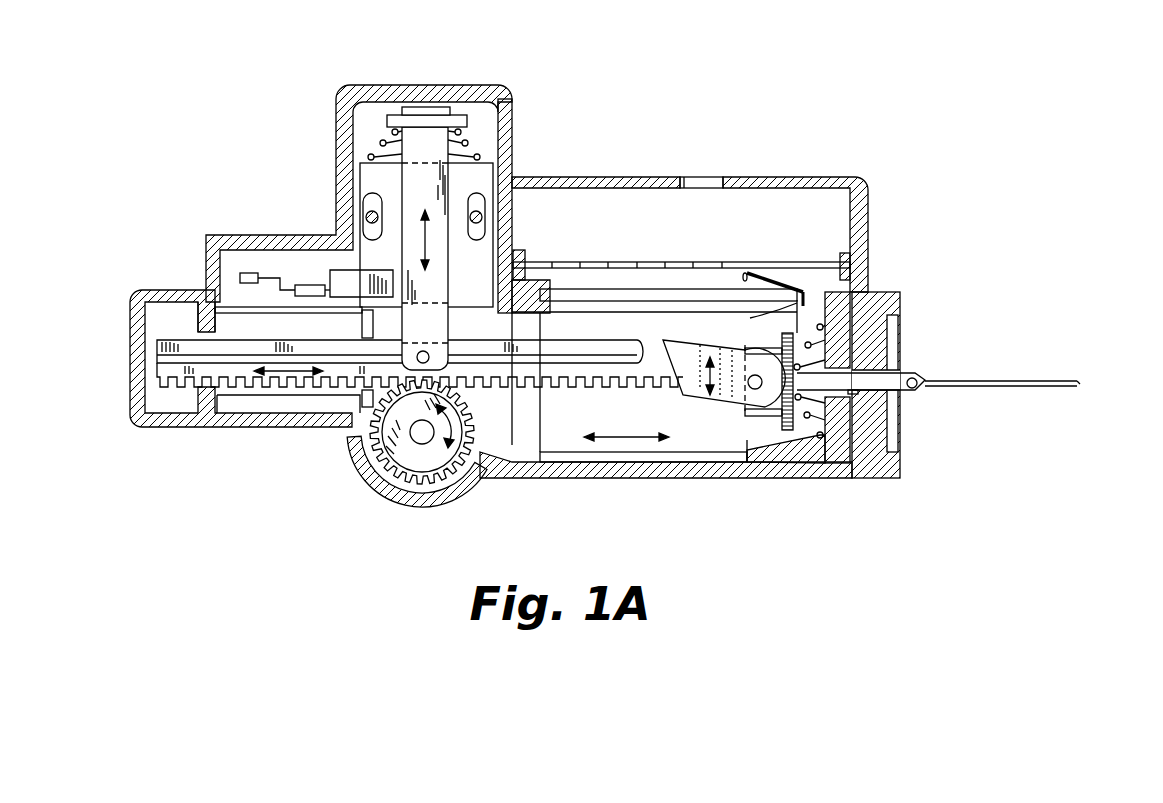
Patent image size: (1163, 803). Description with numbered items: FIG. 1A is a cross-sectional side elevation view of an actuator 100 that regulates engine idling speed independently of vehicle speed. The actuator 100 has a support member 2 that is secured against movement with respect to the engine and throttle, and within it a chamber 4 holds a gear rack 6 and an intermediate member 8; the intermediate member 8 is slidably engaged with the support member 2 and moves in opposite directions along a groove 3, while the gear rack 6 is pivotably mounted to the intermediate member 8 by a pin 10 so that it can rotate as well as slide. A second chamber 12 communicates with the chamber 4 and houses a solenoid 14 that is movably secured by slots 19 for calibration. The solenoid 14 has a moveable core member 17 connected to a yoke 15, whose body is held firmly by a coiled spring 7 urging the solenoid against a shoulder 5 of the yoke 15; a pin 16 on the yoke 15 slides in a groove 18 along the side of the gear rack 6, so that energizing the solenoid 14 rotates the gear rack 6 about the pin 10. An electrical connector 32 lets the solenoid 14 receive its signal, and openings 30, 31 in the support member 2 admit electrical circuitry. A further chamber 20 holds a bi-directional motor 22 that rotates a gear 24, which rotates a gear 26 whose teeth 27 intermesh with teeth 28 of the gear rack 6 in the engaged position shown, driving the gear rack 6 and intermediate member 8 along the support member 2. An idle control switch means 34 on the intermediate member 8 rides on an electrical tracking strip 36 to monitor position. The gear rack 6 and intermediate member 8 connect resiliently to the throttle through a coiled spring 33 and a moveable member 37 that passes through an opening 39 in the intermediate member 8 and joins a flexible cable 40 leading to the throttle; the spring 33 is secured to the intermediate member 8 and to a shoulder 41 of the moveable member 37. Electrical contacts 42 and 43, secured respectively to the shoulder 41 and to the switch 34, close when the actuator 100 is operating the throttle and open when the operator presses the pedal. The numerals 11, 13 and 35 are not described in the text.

The actuator 100 is at (582, 131).
The support member 2 is at (728, 475).
The groove 3 is at (604, 295).
The chamber 4 is at (712, 445).
The shoulder 5 is at (440, 305).
The gear rack 6 is at (725, 398).
The coiled spring 7 is at (383, 143).
The intermediate member 8 is at (813, 470).
The pin 10 is at (752, 390).
The end block 11 is at (878, 292).
The chamber 12 is at (483, 122).
The cap flange 13 is at (397, 113).
The solenoid 14 is at (516, 150).
The yoke 15 is at (413, 178).
The pin 16 is at (427, 352).
The moveable core member 17 is at (437, 107).
The groove 18 is at (166, 350).
The slots 19 is at (368, 210).
The chamber 20 is at (236, 400).
The bi-directional motor 22 is at (298, 398).
The gear 24 is at (395, 355).
The gear 26 is at (378, 476).
The teeth 27 is at (445, 480).
The teeth 28 is at (627, 387).
The opening 30 is at (703, 176).
The opening 31 is at (178, 290).
The electrical connector 32 is at (236, 272).
The coiled spring 33 is at (828, 340).
The idle control switch means 34 is at (748, 277).
The plate 35 is at (668, 300).
The electrical tracking strip 36 is at (545, 268).
The moveable member 37 is at (873, 373).
The opening 39 is at (855, 393).
The flexible cable 40 is at (960, 382).
The shoulder 41 is at (783, 425).
The electrical contact 42 is at (797, 305).
The electrical contact 43 is at (804, 300).